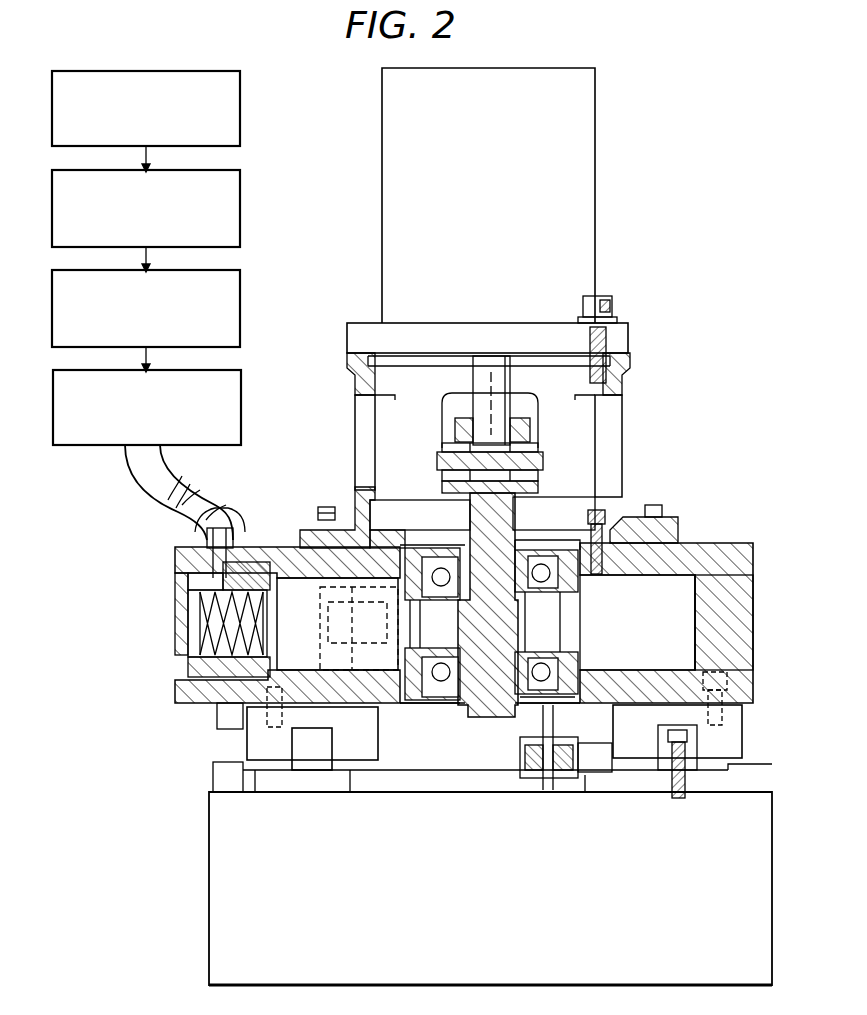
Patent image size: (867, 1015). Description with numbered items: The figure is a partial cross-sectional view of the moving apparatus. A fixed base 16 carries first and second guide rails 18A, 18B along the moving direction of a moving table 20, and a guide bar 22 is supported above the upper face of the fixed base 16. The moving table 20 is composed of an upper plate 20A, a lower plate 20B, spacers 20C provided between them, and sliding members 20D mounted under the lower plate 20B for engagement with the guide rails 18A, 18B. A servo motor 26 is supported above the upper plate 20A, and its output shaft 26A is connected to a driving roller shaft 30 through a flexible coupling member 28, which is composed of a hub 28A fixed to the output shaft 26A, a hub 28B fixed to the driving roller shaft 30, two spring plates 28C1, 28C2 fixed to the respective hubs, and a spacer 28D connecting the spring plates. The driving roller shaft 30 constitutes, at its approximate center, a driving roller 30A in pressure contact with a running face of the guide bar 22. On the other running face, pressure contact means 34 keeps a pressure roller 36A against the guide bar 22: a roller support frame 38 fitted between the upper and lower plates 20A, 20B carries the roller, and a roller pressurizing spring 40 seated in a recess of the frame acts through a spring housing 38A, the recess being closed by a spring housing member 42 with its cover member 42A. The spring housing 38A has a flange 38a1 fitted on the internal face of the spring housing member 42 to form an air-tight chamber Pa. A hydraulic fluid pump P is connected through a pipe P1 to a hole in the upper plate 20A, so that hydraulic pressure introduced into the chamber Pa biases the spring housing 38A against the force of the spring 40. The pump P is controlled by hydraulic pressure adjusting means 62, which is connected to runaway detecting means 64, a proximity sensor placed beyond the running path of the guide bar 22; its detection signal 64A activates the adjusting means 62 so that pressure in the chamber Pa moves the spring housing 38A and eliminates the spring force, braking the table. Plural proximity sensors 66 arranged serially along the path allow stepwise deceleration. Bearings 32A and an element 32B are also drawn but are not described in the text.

The proximity sensors 66 is at (240, 110).
The runaway detecting means 64 is at (240, 210).
The detection signal 64A is at (148, 258).
The hydraulic pressure adjusting means 62 is at (240, 307).
The hydraulic fluid pump P is at (241, 405).
The pipe P1 is at (140, 490).
The air-tight chamber Pa is at (243, 570).
The servo motor 26 is at (598, 158).
The output shaft 26A is at (455, 405).
The flexible coupling member 28 is at (432, 457).
The hub 28A is at (458, 430).
The hub 28B is at (532, 480).
The spring plate 28C1 is at (542, 449).
The spring plate 28C2 is at (560, 478).
The spacer 28D is at (560, 453).
The driving roller shaft 30 is at (472, 510).
The driving roller 30A is at (505, 625).
The guide bar 22 is at (413, 612).
The bearing 32A is at (548, 565).
The rotary encoder 32B is at (487, 700).
The pressure roller 36A is at (383, 705).
The moving table 20 is at (670, 560).
The upper plate 20A is at (640, 540).
The lower plate 20B is at (725, 680).
The spacer 20C is at (742, 612).
The sliding member 20D is at (365, 747).
The first guide rail 18A is at (695, 748).
The second guide rail 18B is at (312, 760).
The fixed base 16 is at (210, 893).
The pressure contact means 34 is at (219, 607).
The roller support frame 38 is at (300, 596).
The spring housing 38A is at (268, 615).
The flange 38a1 is at (200, 590).
The roller pressurizing spring 40 is at (178, 632).
The spring housing member 42 is at (180, 567).
The cover member 42A is at (185, 606).